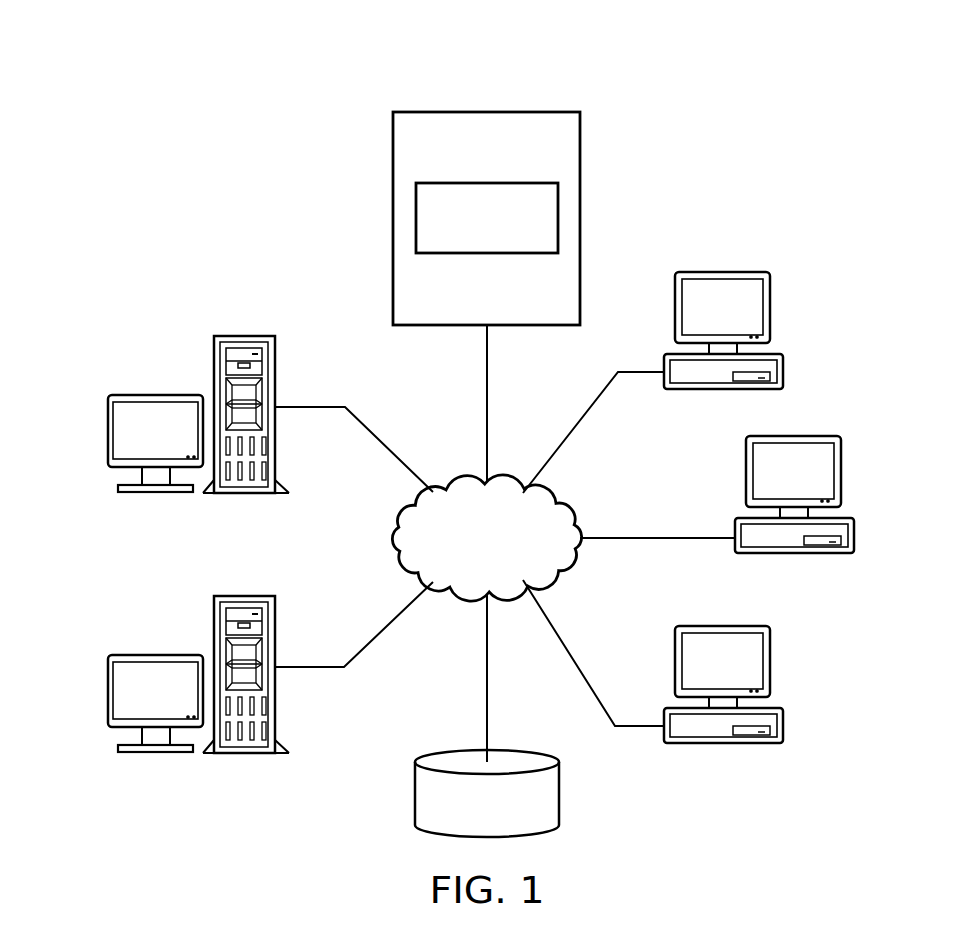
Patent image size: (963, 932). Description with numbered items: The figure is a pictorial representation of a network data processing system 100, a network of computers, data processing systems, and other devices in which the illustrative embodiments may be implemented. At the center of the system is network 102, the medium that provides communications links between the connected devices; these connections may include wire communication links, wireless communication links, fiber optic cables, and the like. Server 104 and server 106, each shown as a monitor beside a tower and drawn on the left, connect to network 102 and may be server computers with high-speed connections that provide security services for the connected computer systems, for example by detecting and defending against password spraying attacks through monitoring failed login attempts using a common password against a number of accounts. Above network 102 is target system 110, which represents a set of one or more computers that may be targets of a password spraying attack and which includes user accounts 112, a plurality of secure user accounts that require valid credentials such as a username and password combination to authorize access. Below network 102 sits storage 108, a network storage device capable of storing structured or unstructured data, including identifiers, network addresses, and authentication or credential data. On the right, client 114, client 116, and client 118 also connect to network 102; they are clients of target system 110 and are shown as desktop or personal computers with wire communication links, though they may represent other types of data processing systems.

The network data processing system 100 is at (278, 58).
The network 102 is at (458, 486).
The server 104 is at (108, 430).
The server 106 is at (108, 692).
The storage 108 is at (415, 797).
The target system 110 is at (486, 188).
The user accounts 112 is at (487, 255).
The client 114 is at (783, 362).
The client 116 is at (853, 545).
The client 118 is at (783, 733).